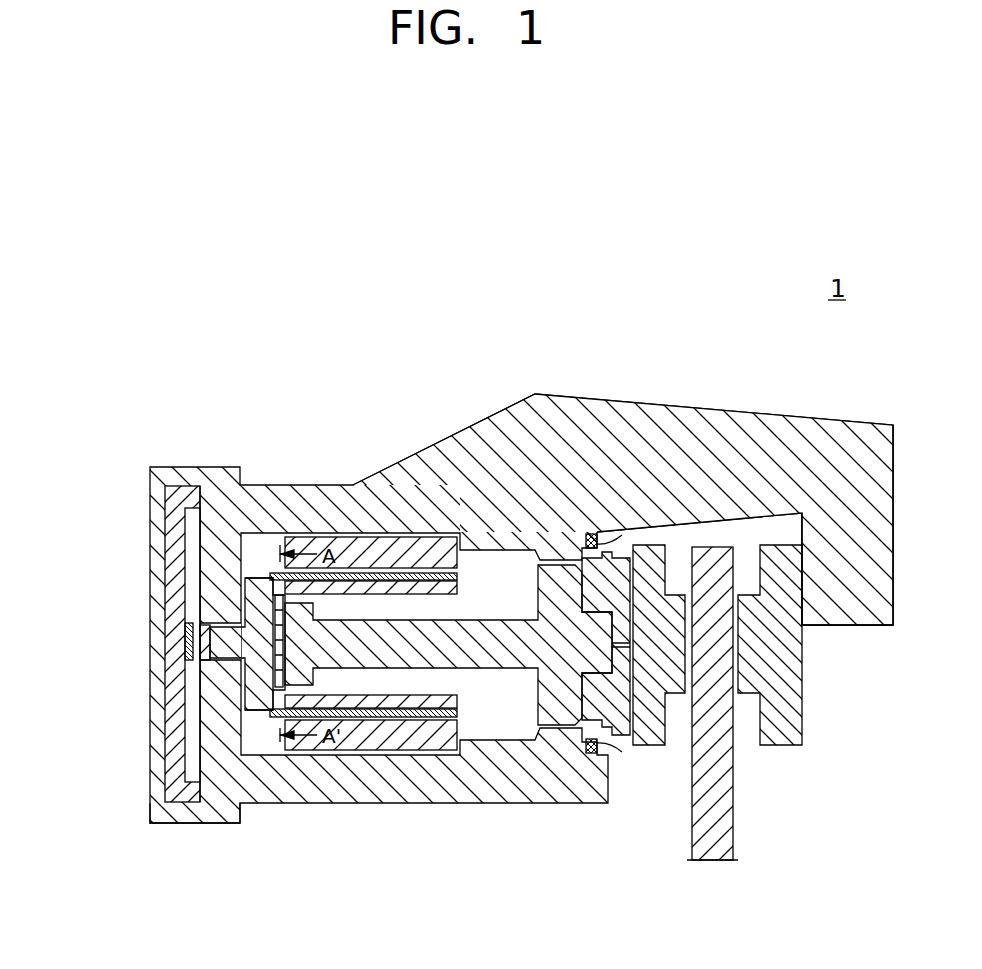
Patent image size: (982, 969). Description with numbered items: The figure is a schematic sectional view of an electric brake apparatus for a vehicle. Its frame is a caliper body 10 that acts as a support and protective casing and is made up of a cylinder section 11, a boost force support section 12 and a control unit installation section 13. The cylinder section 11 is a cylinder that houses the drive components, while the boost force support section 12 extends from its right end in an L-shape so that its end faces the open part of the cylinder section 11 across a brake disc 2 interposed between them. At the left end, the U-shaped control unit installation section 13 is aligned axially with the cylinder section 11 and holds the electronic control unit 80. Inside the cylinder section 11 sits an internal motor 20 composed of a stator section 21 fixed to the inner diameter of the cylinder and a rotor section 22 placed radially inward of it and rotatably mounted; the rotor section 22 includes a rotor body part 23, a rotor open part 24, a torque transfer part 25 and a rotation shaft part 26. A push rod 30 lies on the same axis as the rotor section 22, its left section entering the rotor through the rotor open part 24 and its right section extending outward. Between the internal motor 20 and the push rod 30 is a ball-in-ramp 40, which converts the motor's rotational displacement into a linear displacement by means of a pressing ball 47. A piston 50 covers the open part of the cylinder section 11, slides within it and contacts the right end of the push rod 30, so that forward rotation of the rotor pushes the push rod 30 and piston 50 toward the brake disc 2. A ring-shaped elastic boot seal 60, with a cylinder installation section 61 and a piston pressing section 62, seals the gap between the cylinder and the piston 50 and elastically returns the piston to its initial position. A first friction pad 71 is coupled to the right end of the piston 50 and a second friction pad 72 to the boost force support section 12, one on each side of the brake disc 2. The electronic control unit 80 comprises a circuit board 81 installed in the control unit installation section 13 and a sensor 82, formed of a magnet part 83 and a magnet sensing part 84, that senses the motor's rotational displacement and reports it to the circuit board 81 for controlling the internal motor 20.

The brake disc 2 is at (715, 833).
The caliper body 10 is at (576, 395).
The cylinder section 11 is at (425, 787).
The boost force support section 12 is at (855, 610).
The control unit installation section 13 is at (180, 813).
The internal motor 20 is at (347, 769).
The stator section 21 is at (382, 738).
The rotor section 22 is at (267, 722).
The rotor body part 23 is at (358, 555).
The rotor open part 24 is at (443, 612).
The torque transfer part 25 is at (262, 578).
The rotation shaft part 26 is at (222, 630).
The push rod 30 is at (493, 650).
The ball-in-ramp 40 is at (159, 696).
The pressing ball 47 is at (220, 710).
The piston 50 is at (610, 712).
The boot seal 60 is at (663, 517).
The cylinder installation section 61 is at (594, 533).
The piston pressing section 62 is at (606, 541).
The first friction pad 71 is at (647, 733).
The second friction pad 72 is at (780, 737).
The electronic control unit 80 is at (118, 644).
The circuit board 81 is at (177, 575).
The sensor 82 is at (118, 648).
The magnet part 83 is at (203, 645).
The magnet sensing part 84 is at (187, 630).